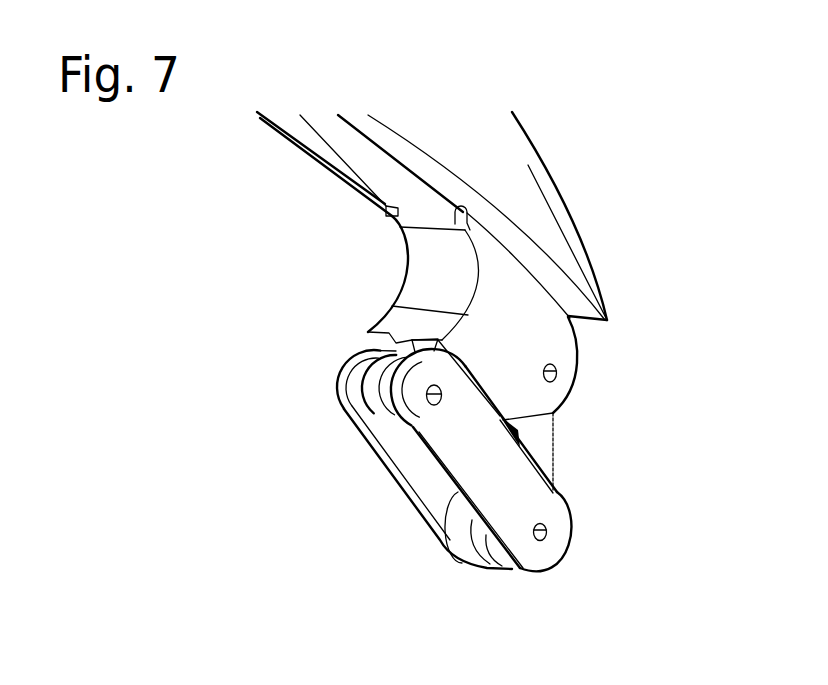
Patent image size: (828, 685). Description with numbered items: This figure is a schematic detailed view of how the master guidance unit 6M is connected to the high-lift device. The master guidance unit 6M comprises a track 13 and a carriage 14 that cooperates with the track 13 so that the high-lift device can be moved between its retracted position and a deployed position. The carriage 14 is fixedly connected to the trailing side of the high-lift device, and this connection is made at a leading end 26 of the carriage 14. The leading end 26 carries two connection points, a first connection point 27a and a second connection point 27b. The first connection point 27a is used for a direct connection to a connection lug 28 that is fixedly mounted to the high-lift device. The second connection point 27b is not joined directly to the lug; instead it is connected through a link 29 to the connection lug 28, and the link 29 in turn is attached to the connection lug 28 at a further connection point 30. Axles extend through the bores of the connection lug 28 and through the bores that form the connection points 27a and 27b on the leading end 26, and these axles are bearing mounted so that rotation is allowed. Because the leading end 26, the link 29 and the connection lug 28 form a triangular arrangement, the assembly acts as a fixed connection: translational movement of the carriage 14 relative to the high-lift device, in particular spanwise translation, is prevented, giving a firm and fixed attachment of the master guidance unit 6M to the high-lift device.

The master guidance unit 6M is at (322, 192).
The track 13 is at (527, 163).
The carriage 14 is at (447, 277).
The leading end 26 is at (547, 333).
The first connection point 27a is at (553, 376).
The second connection point 27b is at (435, 405).
The connection lug 28 is at (540, 451).
The link 29 is at (437, 544).
The connection point 30 is at (546, 530).